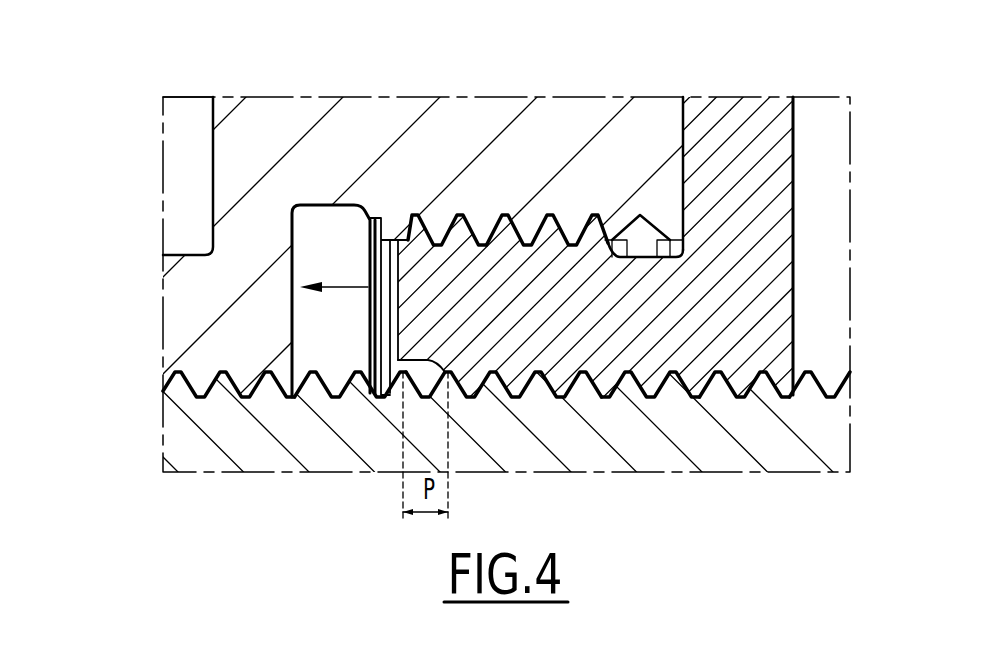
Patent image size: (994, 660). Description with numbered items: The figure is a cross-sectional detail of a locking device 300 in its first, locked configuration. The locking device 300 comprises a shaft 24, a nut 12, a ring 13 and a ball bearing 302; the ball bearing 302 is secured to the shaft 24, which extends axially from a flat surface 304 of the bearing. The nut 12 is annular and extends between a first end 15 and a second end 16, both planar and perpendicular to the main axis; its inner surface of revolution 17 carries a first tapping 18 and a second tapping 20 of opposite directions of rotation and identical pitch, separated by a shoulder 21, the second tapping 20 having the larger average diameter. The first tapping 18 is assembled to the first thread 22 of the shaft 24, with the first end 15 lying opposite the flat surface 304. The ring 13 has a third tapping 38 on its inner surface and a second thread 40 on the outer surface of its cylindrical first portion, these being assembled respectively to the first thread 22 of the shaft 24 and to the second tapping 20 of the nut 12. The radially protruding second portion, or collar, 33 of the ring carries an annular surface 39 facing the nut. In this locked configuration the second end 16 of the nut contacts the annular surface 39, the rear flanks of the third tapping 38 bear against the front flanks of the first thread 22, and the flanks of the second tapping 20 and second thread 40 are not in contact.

The nut 12 is at (230, 178).
The ring 13 is at (551, 351).
The first end 15 is at (163, 311).
The second end 16 is at (683, 130).
The inner surface of revolution 17 is at (368, 213).
The first tapping 18 is at (247, 395).
The second tapping 20 is at (417, 216).
The shoulder 21 is at (318, 395).
The first thread 22 is at (731, 372).
The shaft 24 is at (821, 391).
The second portion 33 is at (773, 210).
The third tapping 38 is at (628, 396).
The annular surface 39 is at (682, 232).
The second thread 40 is at (500, 217).
The locking device 300 is at (449, 416).
The ball bearing 302 is at (132, 399).
The flat surface 304 is at (163, 158).